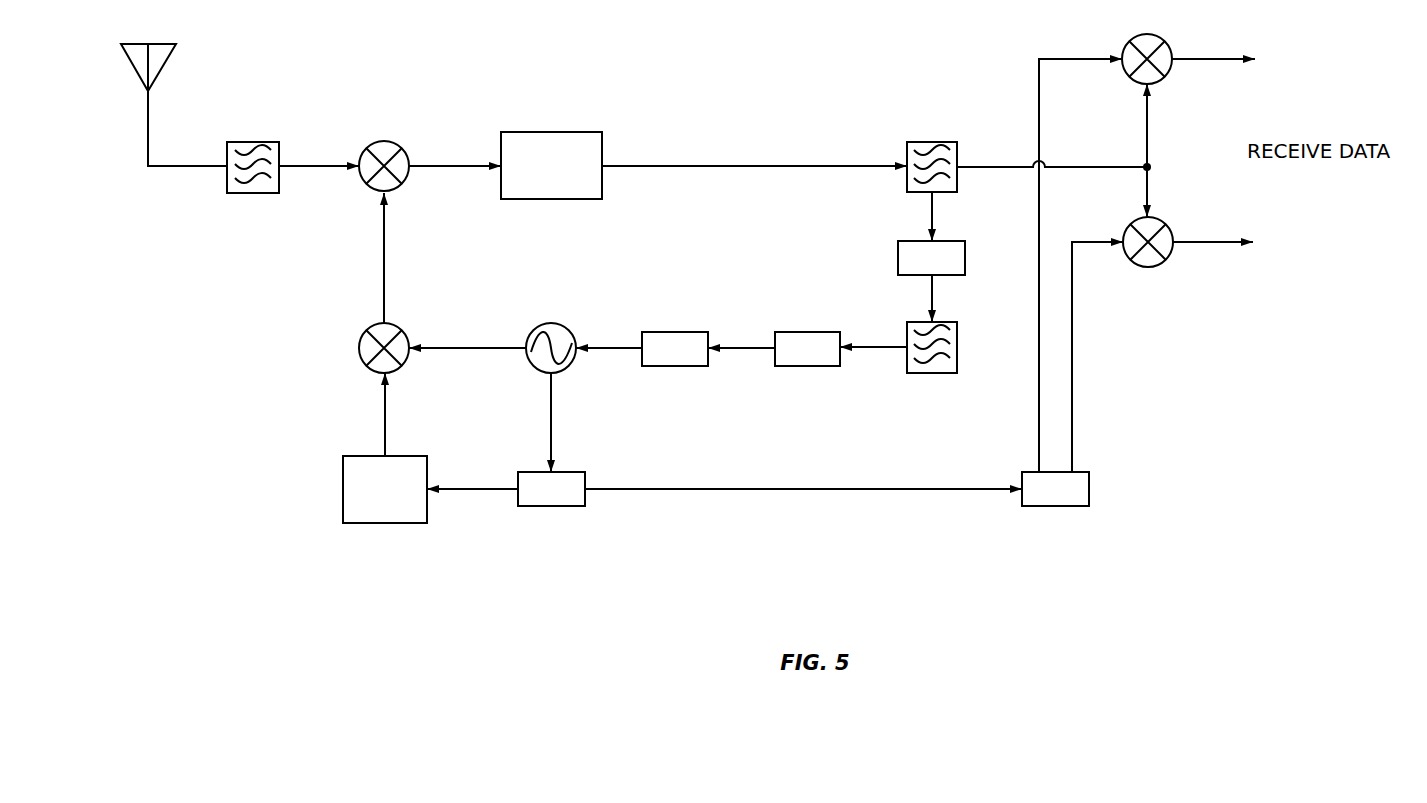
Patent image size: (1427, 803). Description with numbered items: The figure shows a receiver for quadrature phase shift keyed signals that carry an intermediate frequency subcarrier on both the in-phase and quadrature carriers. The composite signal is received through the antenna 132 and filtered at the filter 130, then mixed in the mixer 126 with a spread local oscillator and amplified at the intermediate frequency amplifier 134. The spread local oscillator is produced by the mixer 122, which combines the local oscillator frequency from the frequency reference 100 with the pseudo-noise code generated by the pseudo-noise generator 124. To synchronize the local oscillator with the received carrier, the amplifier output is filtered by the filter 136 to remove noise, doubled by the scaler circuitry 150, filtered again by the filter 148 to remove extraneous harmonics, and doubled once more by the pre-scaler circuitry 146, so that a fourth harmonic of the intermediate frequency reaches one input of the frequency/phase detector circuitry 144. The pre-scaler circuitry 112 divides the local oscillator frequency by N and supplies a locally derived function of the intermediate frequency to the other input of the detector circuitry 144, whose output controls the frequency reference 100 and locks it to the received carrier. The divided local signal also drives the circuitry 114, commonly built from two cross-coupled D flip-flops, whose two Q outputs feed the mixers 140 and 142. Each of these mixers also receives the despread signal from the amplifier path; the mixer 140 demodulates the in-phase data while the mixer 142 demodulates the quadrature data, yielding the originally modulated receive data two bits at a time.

The frequency reference 100 is at (565, 325).
The pre-scaler circuitry 112 is at (570, 472).
The divide-by-four circuitry 114 is at (1089, 483).
The mixer 122 is at (400, 325).
The pseudo-noise generator 124 is at (410, 456).
The mixer 126 is at (400, 143).
The filter 130 is at (261, 142).
The antenna 132 is at (165, 62).
The intermediate frequency amplifier 134 is at (563, 132).
The filter 136 is at (957, 157).
The mixer 140 is at (1160, 33).
The mixer 142 is at (1160, 220).
The frequency/phase detector circuitry 144 is at (687, 332).
The pre-scaler circuitry 146 is at (813, 332).
The filter 148 is at (957, 337).
The scaler circuitry 150 is at (965, 249).